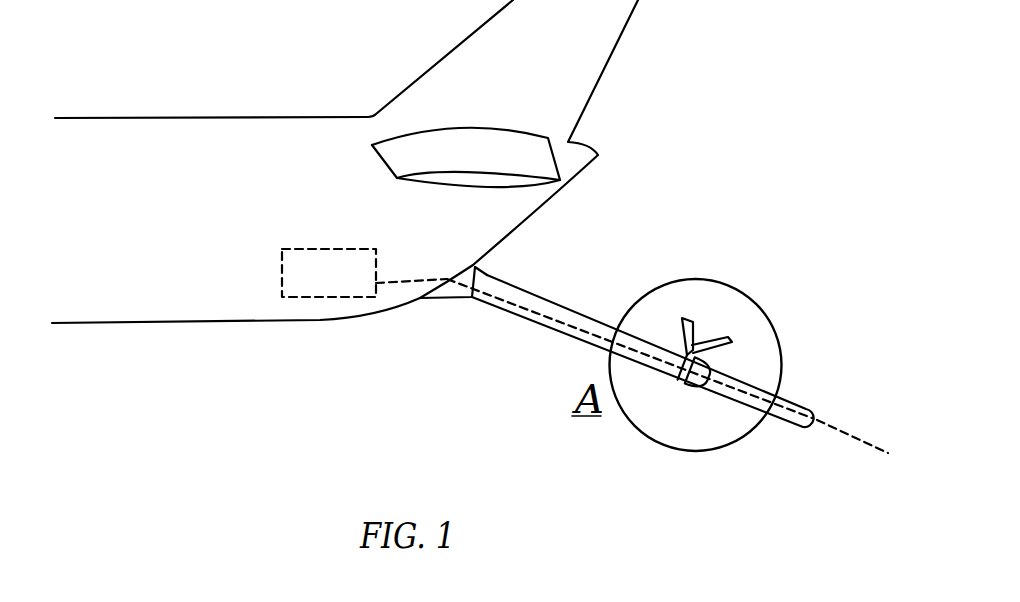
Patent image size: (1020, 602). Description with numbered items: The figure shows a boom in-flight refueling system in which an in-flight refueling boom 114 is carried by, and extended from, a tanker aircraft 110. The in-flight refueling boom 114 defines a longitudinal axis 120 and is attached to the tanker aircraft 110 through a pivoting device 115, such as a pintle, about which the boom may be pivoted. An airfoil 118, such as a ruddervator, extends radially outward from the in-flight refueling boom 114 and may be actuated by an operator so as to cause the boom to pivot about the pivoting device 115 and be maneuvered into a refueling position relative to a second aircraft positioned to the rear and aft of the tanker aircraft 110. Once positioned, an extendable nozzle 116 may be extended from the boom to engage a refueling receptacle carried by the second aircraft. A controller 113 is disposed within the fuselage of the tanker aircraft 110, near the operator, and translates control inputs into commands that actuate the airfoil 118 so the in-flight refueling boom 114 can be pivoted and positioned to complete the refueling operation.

The tanker aircraft 110 is at (240, 180).
The controller 113 is at (335, 282).
The in-flight refueling boom 114 is at (538, 300).
The pivoting device 115 is at (452, 298).
The extendable nozzle 116 is at (762, 382).
The airfoil 118 is at (699, 325).
The longitudinal axis 120 is at (837, 433).